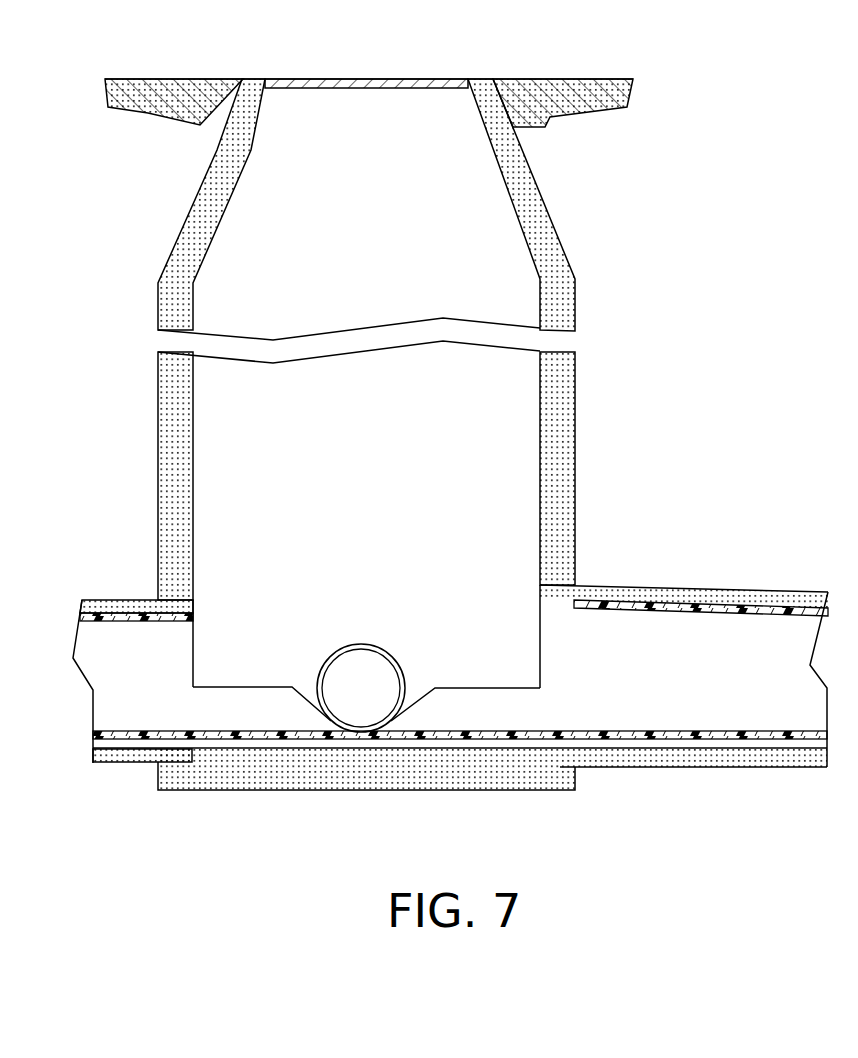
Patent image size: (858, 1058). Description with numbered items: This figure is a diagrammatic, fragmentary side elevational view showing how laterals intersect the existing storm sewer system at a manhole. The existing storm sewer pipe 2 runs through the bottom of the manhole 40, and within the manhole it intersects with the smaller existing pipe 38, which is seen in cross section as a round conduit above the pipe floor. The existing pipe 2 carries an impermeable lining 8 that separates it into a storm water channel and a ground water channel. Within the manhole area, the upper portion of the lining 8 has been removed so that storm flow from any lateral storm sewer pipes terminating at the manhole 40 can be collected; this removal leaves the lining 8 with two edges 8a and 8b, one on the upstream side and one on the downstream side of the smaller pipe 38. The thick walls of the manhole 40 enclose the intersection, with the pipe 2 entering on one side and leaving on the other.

The existing storm sewer pipe 2 is at (697, 664).
The impermeable lining 8 is at (102, 673).
The lining edge 8a is at (198, 693).
The lining edge 8b is at (412, 703).
The smaller existing pipe 38 is at (388, 662).
The manhole 40 is at (562, 483).